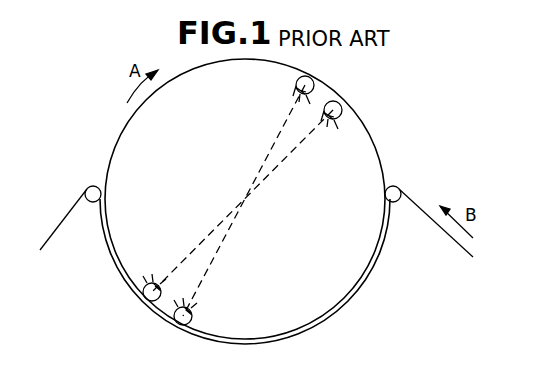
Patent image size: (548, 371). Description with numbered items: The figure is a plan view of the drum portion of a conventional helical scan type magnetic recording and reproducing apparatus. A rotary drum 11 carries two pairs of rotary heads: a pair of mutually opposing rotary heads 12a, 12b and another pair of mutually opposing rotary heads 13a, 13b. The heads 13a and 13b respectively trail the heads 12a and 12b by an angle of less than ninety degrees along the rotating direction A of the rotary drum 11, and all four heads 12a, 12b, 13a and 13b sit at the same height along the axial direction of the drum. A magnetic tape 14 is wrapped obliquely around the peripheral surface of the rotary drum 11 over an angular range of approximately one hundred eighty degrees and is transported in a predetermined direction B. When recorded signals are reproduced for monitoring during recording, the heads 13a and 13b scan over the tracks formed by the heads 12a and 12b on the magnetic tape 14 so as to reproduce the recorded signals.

The rotary drum 11 is at (370, 138).
The rotary head 12a is at (340, 120).
The rotary head 12b is at (148, 284).
The rotary head 13a is at (296, 83).
The rotary head 13b is at (193, 318).
The magnetic tape 14 is at (352, 295).